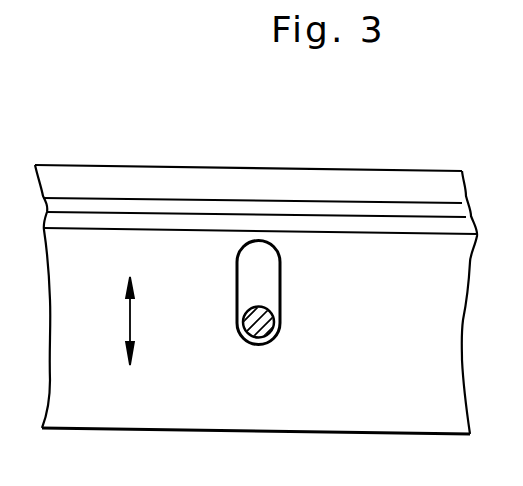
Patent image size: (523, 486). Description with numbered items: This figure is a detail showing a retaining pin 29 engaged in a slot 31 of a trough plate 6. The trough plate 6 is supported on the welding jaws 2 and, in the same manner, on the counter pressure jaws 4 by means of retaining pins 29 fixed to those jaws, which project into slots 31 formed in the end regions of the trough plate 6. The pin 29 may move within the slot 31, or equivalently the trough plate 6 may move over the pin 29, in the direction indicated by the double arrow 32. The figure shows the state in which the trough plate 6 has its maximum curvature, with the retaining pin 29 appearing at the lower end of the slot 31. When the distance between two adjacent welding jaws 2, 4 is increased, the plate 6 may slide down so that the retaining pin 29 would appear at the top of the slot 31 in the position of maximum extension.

The welding jaw 2 is at (98, 178).
The counter pressure jaw 4 is at (129, 202).
The trough plate 6 is at (382, 391).
The retaining pin 29 is at (275, 317).
The slot 31 is at (281, 273).
The double arrow 32 is at (133, 326).